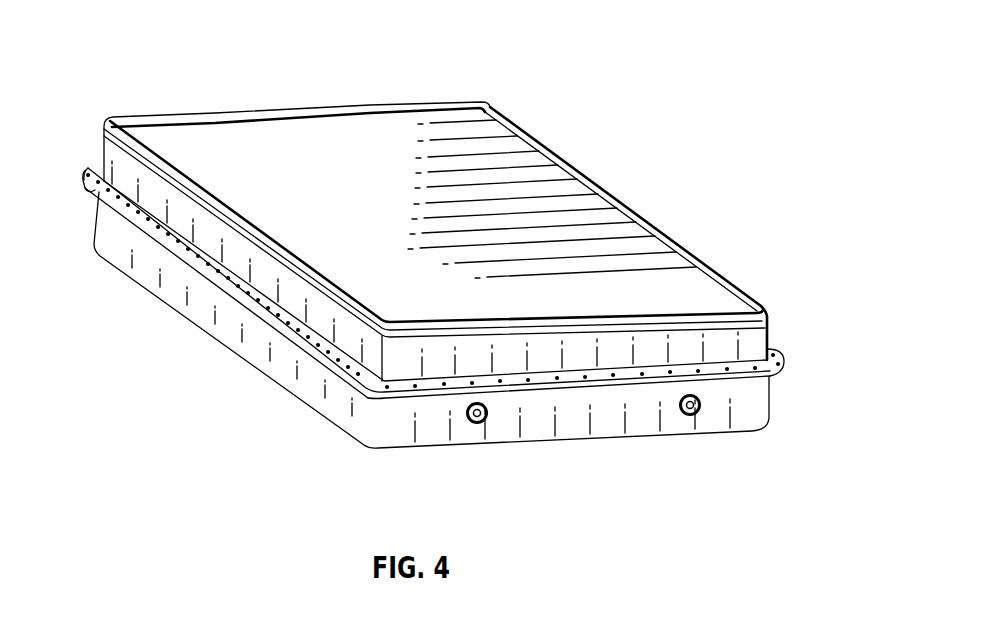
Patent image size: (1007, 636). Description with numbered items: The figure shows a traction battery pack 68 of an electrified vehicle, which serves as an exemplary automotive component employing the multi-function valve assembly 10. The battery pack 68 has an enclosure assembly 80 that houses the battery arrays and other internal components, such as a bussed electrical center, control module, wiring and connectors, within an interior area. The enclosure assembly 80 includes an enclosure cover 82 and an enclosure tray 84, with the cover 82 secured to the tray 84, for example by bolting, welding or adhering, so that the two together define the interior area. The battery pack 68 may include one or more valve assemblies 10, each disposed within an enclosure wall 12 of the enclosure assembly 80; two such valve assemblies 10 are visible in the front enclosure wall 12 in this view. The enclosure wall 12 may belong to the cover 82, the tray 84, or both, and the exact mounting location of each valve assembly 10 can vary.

The valve assembly 10 is at (477, 423).
The enclosure wall 12 is at (547, 432).
The traction battery pack 68 is at (720, 58).
The enclosure assembly 80 is at (697, 205).
The enclosure cover 82 is at (738, 283).
The enclosure tray 84 is at (431, 349).